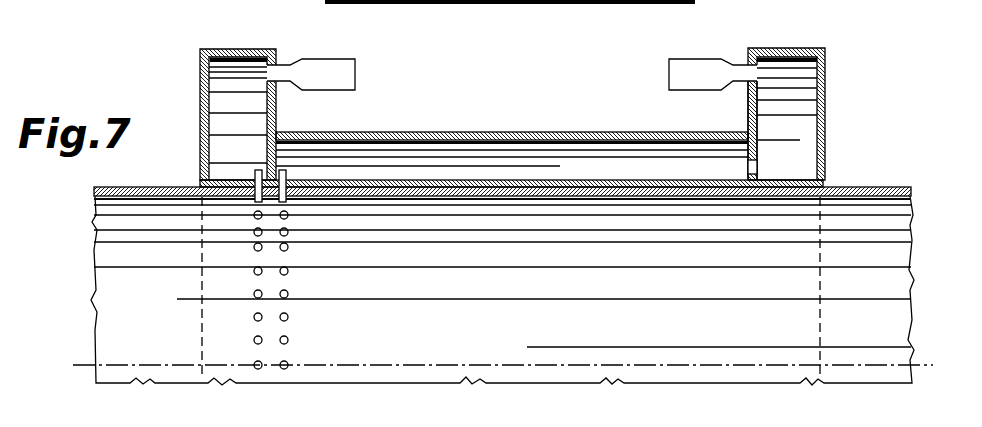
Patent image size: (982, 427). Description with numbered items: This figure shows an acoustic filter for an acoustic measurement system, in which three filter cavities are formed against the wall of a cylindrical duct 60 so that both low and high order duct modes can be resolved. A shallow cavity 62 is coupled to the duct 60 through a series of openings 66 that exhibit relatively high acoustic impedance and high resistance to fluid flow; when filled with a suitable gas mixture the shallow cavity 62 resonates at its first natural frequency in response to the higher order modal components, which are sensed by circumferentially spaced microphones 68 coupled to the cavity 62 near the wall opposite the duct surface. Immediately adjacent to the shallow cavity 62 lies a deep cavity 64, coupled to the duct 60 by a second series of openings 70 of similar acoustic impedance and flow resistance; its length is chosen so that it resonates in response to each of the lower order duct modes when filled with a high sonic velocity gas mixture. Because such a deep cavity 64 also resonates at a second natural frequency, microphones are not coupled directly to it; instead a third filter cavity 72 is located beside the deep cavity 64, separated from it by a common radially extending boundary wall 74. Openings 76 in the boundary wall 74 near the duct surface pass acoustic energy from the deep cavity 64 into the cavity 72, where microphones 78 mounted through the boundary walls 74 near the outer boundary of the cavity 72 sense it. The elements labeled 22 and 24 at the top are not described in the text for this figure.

The tape/record medium 22 is at (488, 0).
The tape guide surface 24 is at (583, 0).
The cylindrical duct 60 is at (143, 363).
The shallow cavity 62 is at (230, 50).
The deep cavity 64 is at (513, 158).
The openings 66 is at (258, 178).
The acoustic detectors or microphones 68 is at (355, 75).
The second series of openings 70 is at (282, 179).
The third filter cavity 72 is at (779, 114).
The boundary wall 74 is at (748, 105).
The openings 76 is at (759, 167).
The acoustic detectors or microphones 78 is at (668, 76).